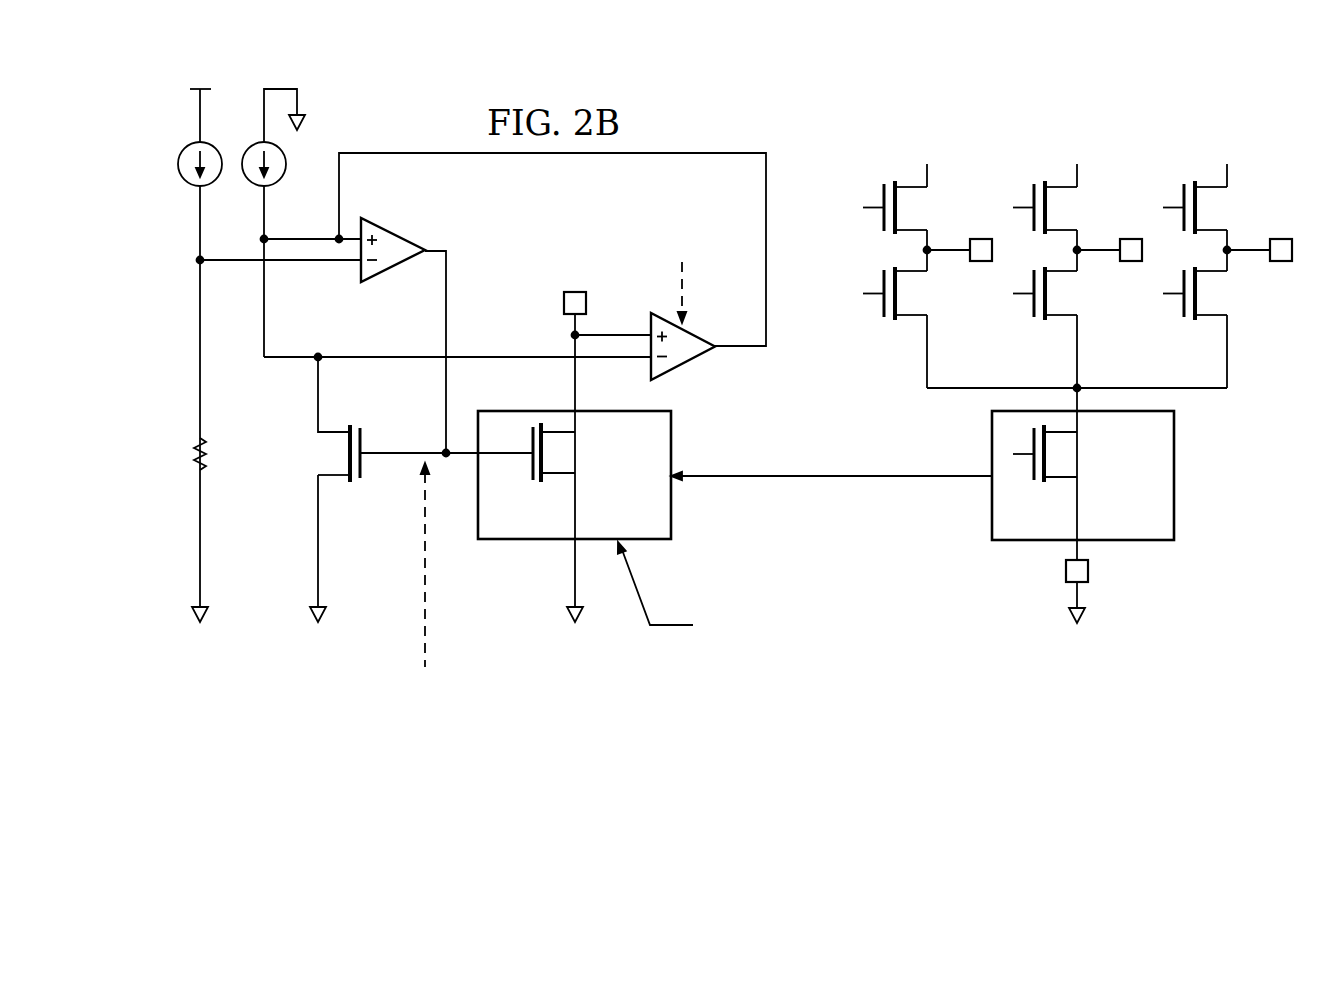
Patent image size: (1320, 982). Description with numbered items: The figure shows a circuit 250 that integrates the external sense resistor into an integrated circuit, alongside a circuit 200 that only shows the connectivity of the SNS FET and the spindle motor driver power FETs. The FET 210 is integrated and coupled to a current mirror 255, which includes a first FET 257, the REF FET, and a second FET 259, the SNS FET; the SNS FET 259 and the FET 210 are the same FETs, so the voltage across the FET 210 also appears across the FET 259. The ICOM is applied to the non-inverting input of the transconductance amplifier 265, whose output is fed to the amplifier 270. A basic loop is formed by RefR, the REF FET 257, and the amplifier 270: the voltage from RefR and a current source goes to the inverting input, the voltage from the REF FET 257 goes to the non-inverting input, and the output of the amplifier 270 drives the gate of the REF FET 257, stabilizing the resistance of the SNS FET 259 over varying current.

The circuit 250 is at (408, 85).
The circuit 200 is at (1146, 127).
The amplifier 270 is at (393, 232).
The transconductance amplifier 265 is at (683, 366).
The current mirror 255 is at (446, 403).
The first FET 257 is at (363, 473).
The second FET 259 is at (532, 473).
The FET 210 is at (1145, 527).